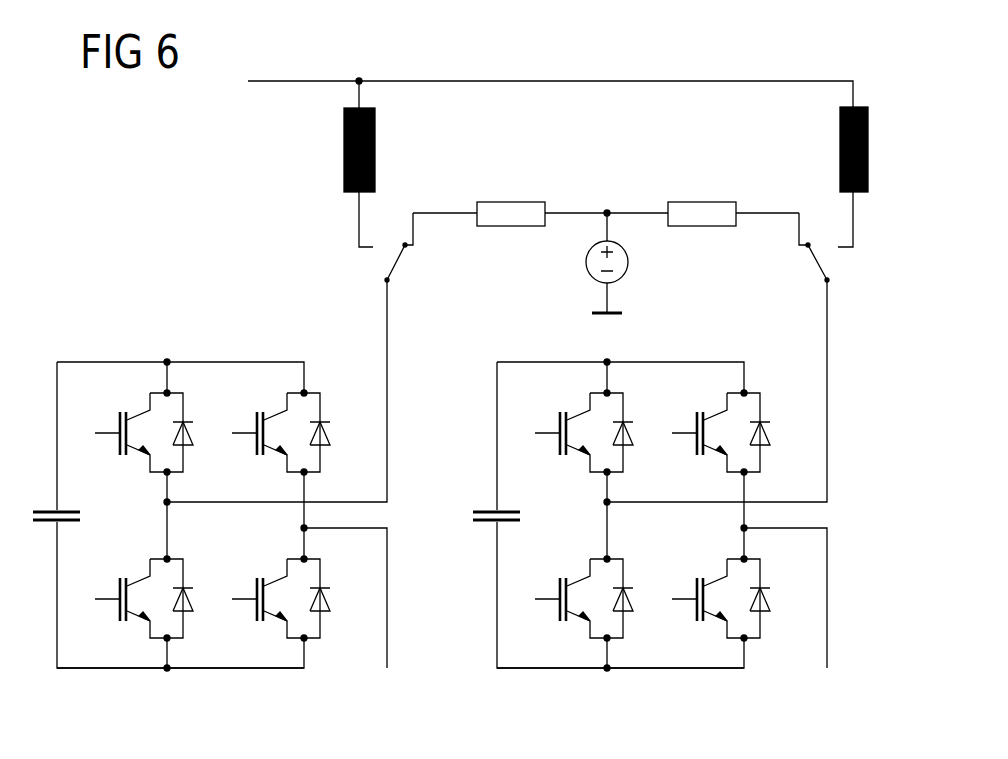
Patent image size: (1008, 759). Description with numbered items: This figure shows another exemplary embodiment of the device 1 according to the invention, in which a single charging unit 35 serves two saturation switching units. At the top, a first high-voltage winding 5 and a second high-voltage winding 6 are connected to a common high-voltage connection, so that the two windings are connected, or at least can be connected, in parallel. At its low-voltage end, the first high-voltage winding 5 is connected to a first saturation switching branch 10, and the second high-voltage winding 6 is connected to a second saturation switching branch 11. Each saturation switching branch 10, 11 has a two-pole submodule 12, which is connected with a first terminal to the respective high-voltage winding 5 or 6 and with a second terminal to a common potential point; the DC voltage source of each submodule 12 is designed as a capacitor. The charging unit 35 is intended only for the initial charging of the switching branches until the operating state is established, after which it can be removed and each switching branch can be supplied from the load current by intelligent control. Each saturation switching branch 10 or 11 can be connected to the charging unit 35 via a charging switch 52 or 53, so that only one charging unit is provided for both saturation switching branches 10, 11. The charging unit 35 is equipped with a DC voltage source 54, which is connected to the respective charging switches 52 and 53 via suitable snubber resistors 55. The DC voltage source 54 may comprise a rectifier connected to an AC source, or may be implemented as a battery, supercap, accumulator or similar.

The device 1 is at (469, 416).
The first high-voltage winding 5 is at (376, 150).
The second high-voltage winding 6 is at (838, 150).
The saturation switching branch 10 is at (361, 352).
The saturation switching branch 11 is at (848, 352).
The two-pole submodule 12 is at (58, 681).
The charging unit 35 is at (605, 181).
The charging switch 52 is at (408, 266).
The charging switch 53 is at (805, 268).
The DC voltage source 54 is at (629, 262).
The snubber resistor 55 is at (507, 202).